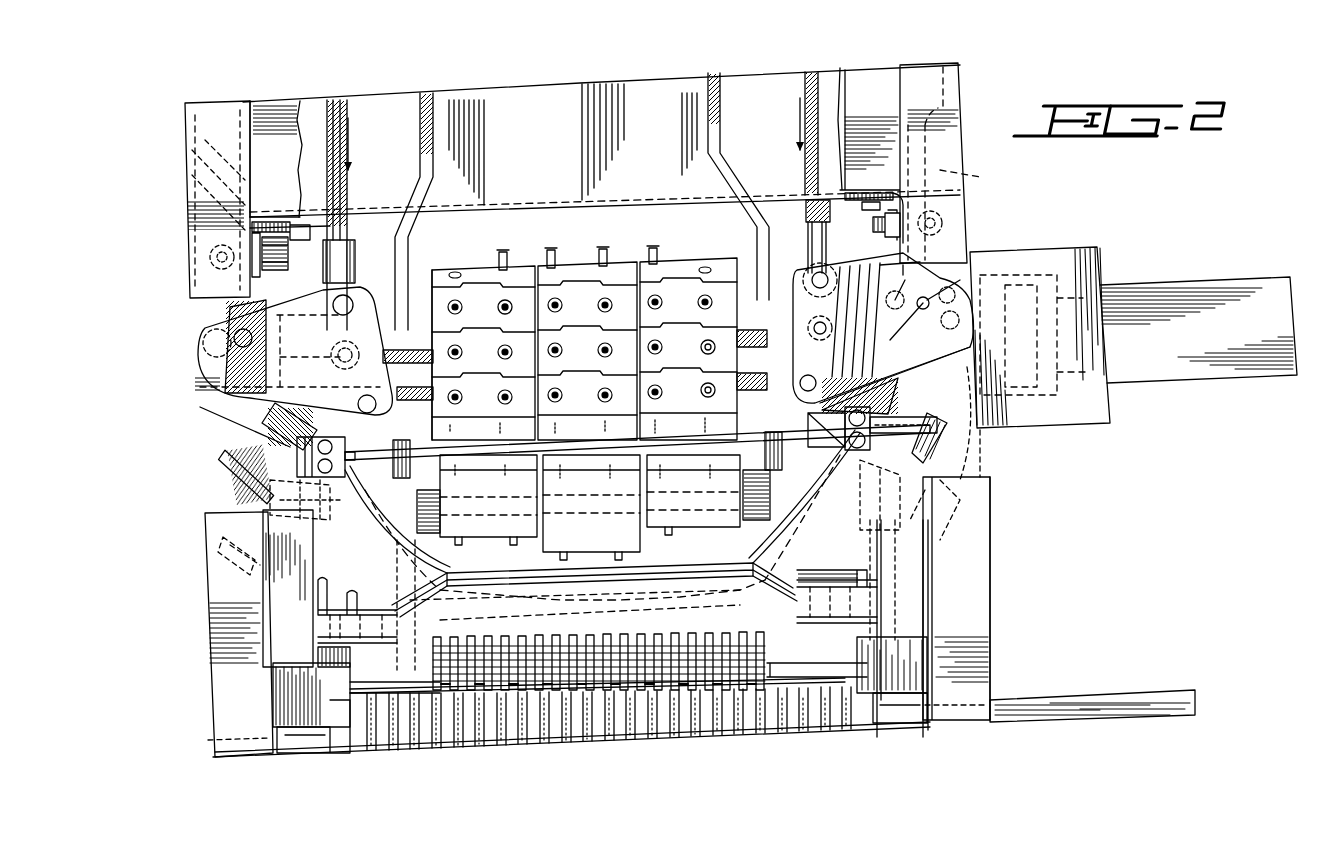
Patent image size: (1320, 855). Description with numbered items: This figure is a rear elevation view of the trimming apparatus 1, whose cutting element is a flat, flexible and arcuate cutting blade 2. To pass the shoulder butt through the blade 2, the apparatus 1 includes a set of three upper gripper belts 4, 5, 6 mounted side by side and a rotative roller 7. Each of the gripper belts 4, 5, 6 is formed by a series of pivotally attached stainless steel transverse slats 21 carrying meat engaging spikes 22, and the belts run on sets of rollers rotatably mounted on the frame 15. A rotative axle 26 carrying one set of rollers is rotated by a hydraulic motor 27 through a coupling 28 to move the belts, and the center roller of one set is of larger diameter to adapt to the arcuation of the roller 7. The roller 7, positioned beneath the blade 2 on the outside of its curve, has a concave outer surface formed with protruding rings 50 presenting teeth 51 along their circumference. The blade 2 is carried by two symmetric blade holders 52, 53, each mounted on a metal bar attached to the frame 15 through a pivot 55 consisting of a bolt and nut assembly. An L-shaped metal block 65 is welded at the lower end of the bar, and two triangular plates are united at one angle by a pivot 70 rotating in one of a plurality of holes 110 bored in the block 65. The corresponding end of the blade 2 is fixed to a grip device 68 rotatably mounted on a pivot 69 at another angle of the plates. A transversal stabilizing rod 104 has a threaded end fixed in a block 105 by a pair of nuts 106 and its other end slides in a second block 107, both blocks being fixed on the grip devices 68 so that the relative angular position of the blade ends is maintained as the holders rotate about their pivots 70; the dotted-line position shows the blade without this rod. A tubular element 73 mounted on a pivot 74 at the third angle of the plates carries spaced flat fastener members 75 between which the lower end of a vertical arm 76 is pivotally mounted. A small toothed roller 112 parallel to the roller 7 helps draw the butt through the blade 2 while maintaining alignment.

The trimming apparatus 1 is at (1012, 563).
The cutting blade 2 is at (383, 547).
The upper gripper belt 4 is at (470, 267).
The upper gripper belt 5 is at (589, 262).
The upper gripper belt 6 is at (684, 258).
The rotative roller 7 is at (857, 715).
The frame 15 is at (203, 553).
The transverse slat 21 is at (433, 310).
The meat engaging spike 22 is at (505, 303).
The rotative axle 26 is at (737, 352).
The hydraulic motor 27 is at (1210, 297).
The coupling 28 is at (1067, 264).
The ring 50 is at (613, 717).
The teeth 51 is at (517, 728).
The blade holder 52 is at (247, 395).
The blade holder 53 is at (852, 252).
The pivot 55 is at (960, 195).
The metal block 65 is at (903, 278).
The grip device 68 is at (915, 408).
The pivot 69 is at (800, 383).
The pivot 70 is at (926, 297).
The tubular element 73 is at (812, 279).
The pivot 74 is at (822, 268).
The flat fastener member 75 is at (812, 200).
The vertical arm 76 is at (812, 85).
The transversal stabilizing rod 104 is at (473, 450).
The block 105 is at (290, 444).
The nuts 106 is at (330, 481).
The second block 107 is at (832, 447).
The holes 110 is at (915, 320).
The teethed roller 112 is at (420, 625).